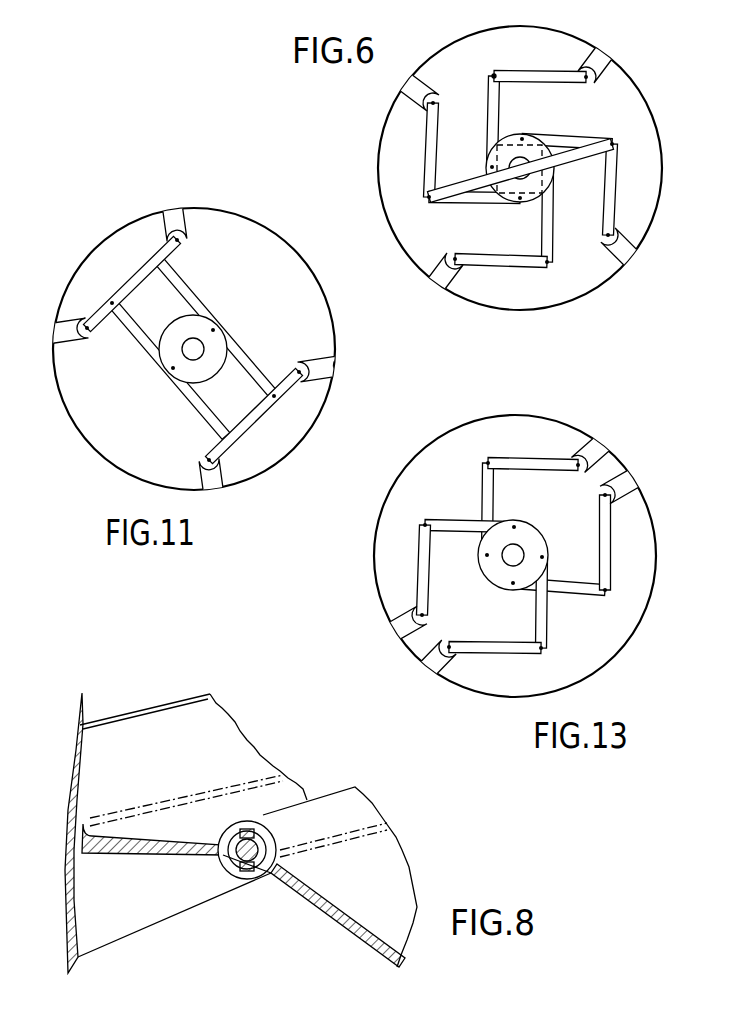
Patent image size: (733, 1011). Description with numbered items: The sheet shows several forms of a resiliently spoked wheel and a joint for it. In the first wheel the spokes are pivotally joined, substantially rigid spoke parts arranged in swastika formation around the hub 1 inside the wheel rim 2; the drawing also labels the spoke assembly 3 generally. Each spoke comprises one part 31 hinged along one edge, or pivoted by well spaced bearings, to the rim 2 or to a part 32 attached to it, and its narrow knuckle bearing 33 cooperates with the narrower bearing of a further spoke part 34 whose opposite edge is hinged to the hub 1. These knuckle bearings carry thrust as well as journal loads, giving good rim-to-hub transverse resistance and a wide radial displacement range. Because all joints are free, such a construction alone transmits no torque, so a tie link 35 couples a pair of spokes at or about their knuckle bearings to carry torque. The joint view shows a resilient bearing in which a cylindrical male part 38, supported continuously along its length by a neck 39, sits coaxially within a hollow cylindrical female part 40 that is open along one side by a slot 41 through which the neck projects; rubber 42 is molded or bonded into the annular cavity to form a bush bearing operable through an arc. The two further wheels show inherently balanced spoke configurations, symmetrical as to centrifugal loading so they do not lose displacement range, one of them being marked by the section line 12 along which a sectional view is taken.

In FIG. 6, the hub 1 is at (488, 166).
In FIG. 6, the wheel rim 2 is at (432, 57).
In FIG. 8, the wheel rim 2 is at (74, 743).
In FIG. 6, the folding arm assembly 3 is at (515, 167).
In FIG. 11, the section line 12 is at (218, 205).
In FIG. 6, the spoke part 31 is at (545, 70).
In FIG. 8, the spoke part 31 is at (341, 917).
In FIG. 6, the part attached to rim 32 is at (598, 78).
In FIG. 8, the part attached to rim 32 is at (103, 830).
In FIG. 6, the knuckle bearing 33 is at (493, 65).
In FIG. 6, the spoke part 34 is at (500, 110).
In FIG. 6, the tie link 35 is at (453, 189).
In FIG. 8, the male part 38 is at (242, 866).
In FIG. 8, the neck 39 is at (193, 843).
In FIG. 8, the female part 40 is at (276, 829).
In FIG. 8, the slot 41 is at (210, 863).
In FIG. 8, the rubber 42 is at (240, 828).